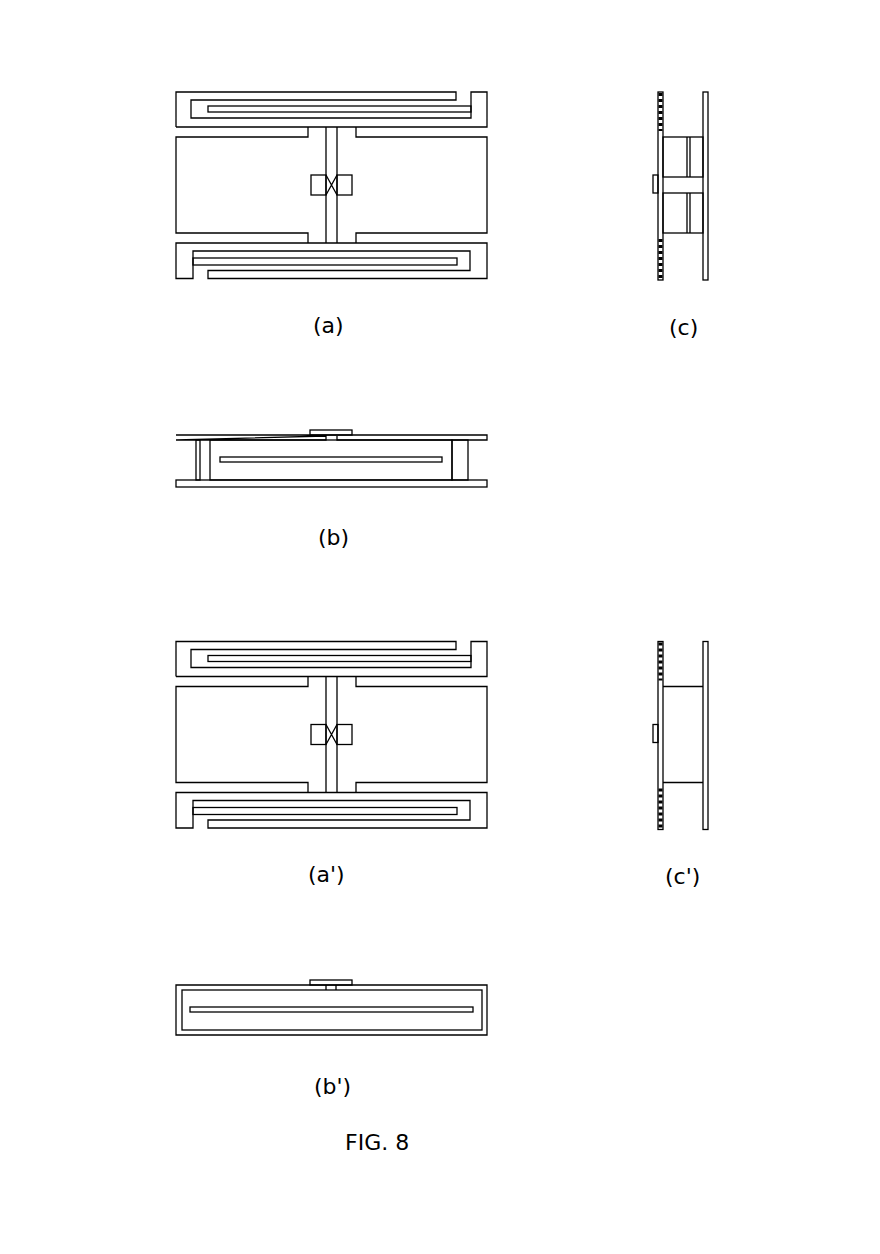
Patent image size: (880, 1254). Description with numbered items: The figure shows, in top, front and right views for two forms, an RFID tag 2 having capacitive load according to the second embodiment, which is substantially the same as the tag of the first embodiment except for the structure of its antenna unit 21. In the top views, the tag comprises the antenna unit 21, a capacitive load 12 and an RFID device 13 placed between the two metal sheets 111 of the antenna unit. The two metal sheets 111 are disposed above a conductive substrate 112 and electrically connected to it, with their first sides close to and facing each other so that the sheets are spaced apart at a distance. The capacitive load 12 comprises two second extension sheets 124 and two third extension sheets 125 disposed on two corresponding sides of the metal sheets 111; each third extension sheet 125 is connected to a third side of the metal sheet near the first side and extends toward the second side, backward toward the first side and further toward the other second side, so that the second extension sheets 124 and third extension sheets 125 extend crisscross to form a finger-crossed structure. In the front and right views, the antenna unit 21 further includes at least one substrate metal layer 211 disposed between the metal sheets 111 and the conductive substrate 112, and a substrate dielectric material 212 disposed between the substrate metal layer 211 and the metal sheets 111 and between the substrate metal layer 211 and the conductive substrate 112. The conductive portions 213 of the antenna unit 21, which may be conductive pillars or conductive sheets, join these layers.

The RFID tag having capacitive load 2 is at (96, 97).
The capacitive load 12 is at (350, 76).
The RFID device 13 is at (343, 190).
The antenna unit 21 is at (108, 396).
The metal sheet 111 is at (182, 209).
The conductive substrate 112 is at (706, 101).
The second extension sheet 124 is at (182, 103).
The third extension sheet 125 is at (182, 272).
The substrate metal layer 211 is at (220, 458).
The substrate dielectric material 212 is at (223, 467).
The conductive portion 213 is at (202, 469).